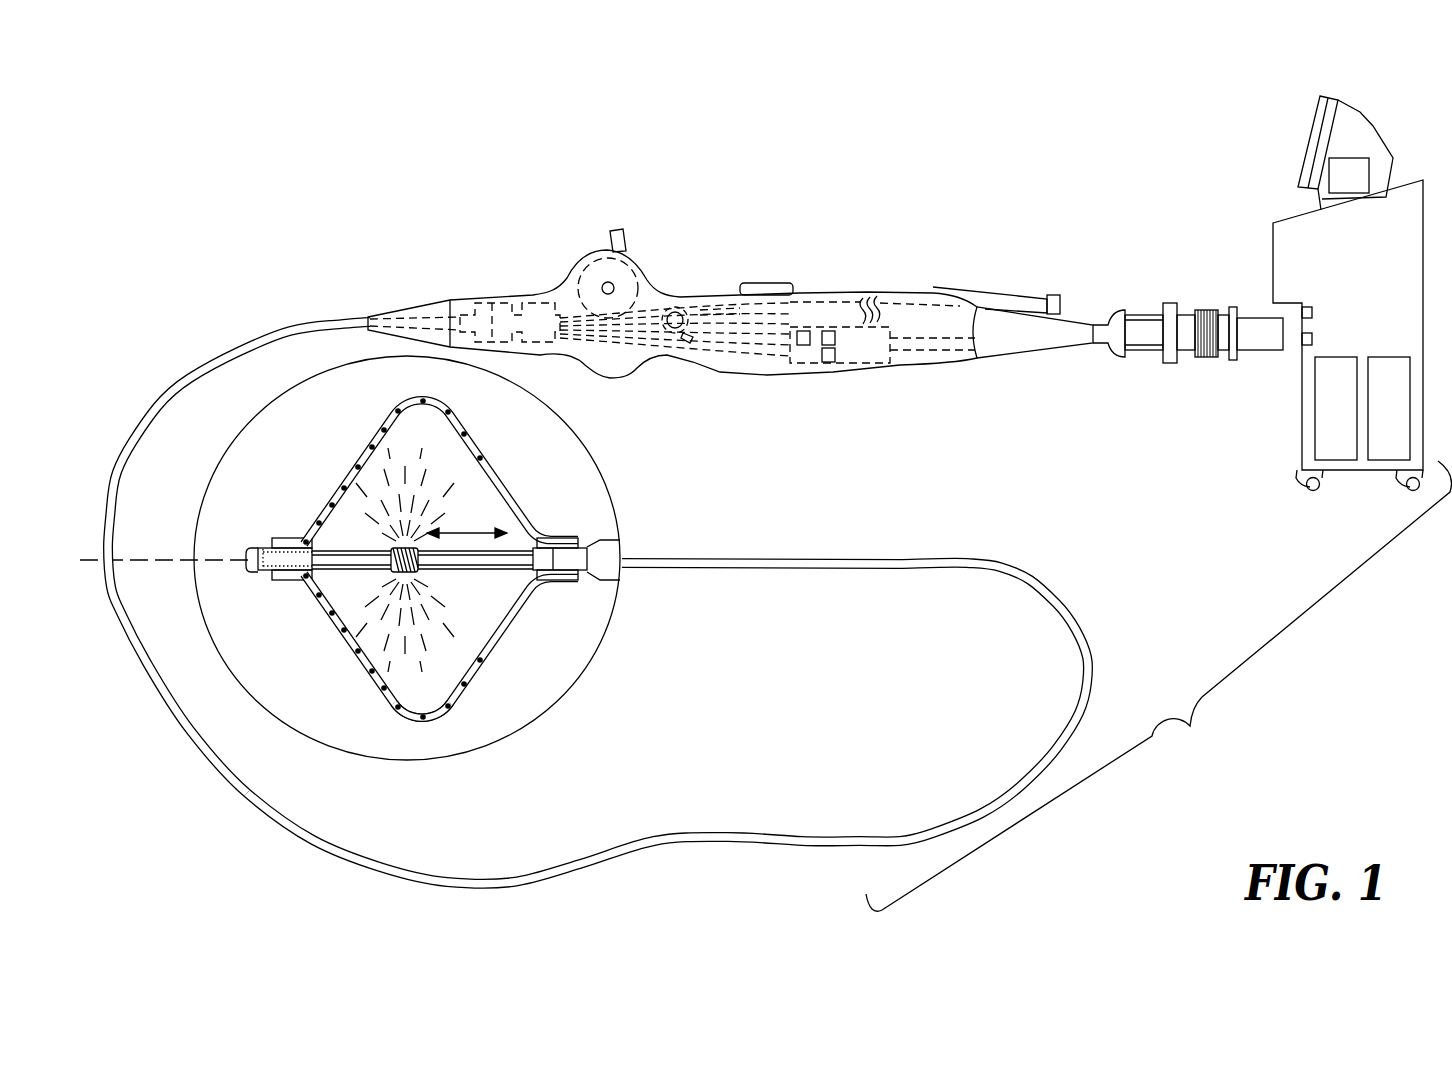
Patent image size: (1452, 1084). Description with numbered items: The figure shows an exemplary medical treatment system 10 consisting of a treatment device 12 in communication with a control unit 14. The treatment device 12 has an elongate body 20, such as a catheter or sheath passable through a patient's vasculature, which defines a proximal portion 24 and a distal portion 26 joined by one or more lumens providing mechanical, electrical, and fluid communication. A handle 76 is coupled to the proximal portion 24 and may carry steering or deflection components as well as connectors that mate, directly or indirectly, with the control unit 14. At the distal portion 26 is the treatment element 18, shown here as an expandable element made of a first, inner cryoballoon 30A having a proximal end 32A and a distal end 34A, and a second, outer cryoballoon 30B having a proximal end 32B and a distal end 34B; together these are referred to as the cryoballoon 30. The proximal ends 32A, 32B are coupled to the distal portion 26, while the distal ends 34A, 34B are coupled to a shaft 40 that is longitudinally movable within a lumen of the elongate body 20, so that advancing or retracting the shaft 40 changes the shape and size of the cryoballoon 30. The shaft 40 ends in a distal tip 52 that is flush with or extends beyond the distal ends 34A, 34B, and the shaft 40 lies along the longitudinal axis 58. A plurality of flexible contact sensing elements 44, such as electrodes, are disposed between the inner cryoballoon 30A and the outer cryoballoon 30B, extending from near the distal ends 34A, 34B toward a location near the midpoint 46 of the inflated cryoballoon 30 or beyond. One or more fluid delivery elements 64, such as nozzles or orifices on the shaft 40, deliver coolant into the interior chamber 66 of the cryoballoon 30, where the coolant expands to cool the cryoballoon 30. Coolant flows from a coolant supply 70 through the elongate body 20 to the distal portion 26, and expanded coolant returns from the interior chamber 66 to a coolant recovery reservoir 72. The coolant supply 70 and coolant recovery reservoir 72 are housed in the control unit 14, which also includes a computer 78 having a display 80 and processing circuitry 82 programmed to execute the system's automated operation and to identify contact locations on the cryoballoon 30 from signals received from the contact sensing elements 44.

The system 10 is at (1159, 686).
The treatment device 12 is at (448, 258).
The control unit 14 is at (1370, 241).
The treatment element 18 is at (350, 445).
The elongate body 20 is at (243, 793).
The proximal portion 24 is at (190, 355).
The distal portion 26 is at (600, 547).
The cryoballoon 30 is at (476, 425).
The first cryoballoon 30A is at (489, 465).
The second cryoballoon 30B is at (512, 487).
The proximal end 32A is at (560, 582).
The proximal end 32B is at (561, 538).
The distal end 34A is at (285, 538).
The distal end 34B is at (279, 582).
The shaft 40 is at (348, 570).
The contact sensing elements 44 is at (370, 678).
The midpoint 46 is at (418, 722).
The distal tip 52 is at (252, 576).
The longitudinal axis 58 is at (150, 558).
The fluid delivery elements 64 is at (418, 577).
The interior chamber 66 is at (408, 446).
The coolant supply 70 is at (1322, 421).
The coolant recovery reservoir 72 is at (1373, 421).
The handle 76 is at (873, 370).
The computer 78 is at (1355, 113).
The display 80 is at (1308, 152).
The processing circuitry 82 is at (1334, 188).